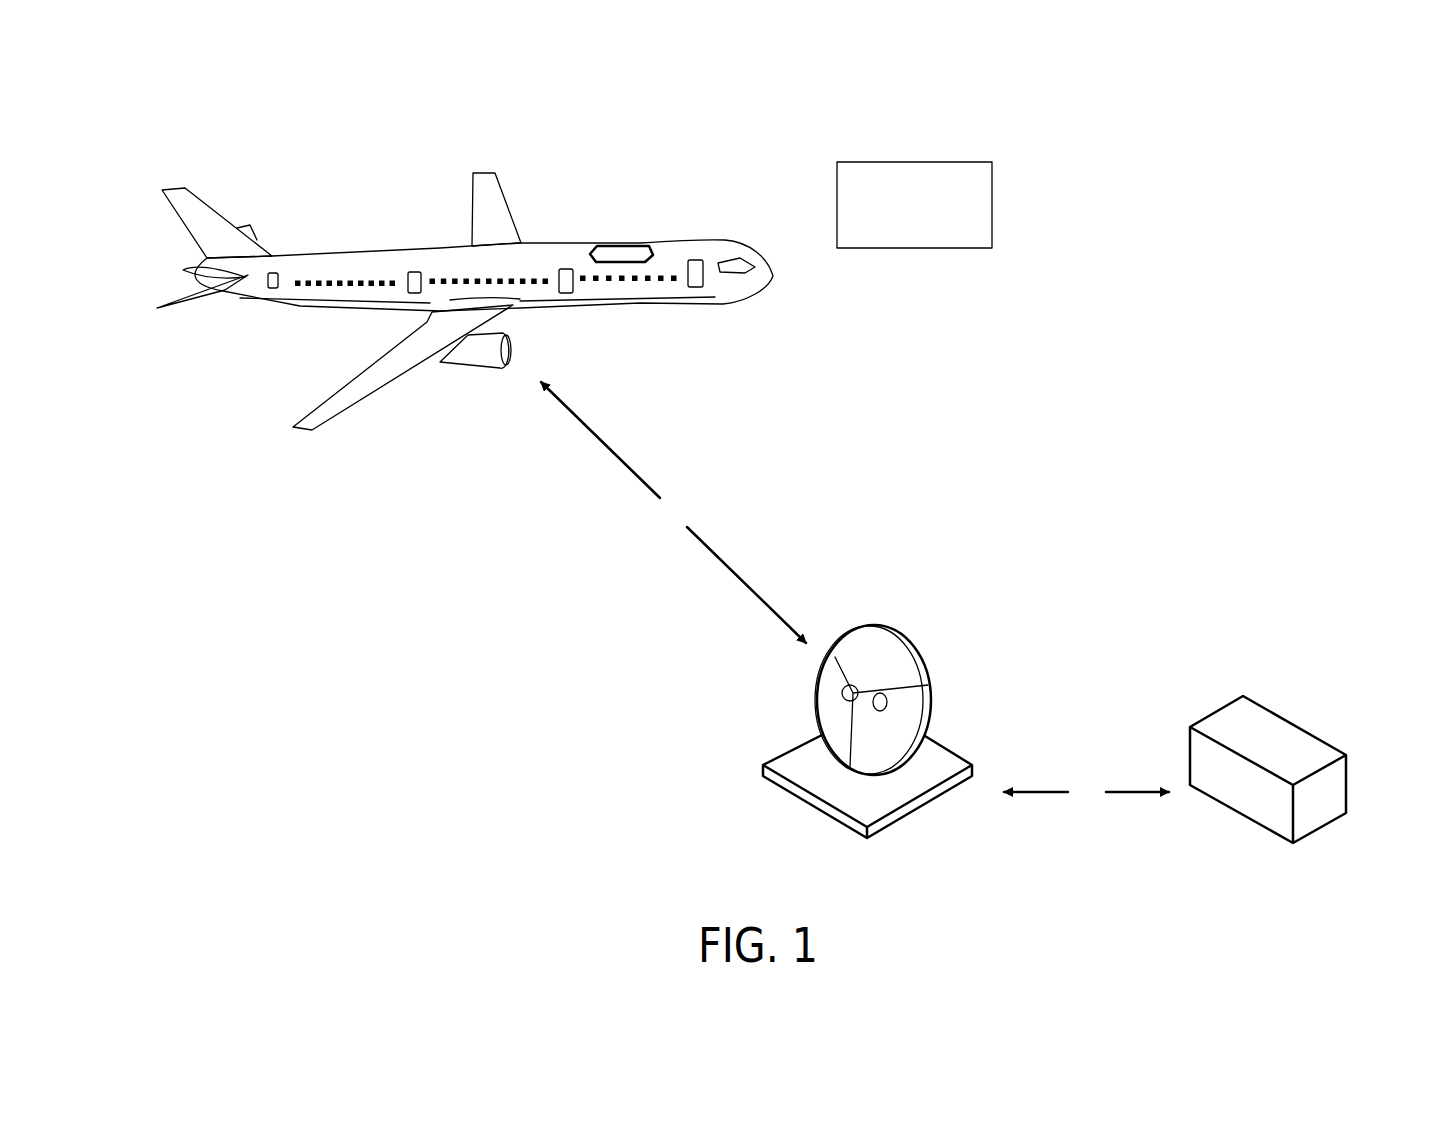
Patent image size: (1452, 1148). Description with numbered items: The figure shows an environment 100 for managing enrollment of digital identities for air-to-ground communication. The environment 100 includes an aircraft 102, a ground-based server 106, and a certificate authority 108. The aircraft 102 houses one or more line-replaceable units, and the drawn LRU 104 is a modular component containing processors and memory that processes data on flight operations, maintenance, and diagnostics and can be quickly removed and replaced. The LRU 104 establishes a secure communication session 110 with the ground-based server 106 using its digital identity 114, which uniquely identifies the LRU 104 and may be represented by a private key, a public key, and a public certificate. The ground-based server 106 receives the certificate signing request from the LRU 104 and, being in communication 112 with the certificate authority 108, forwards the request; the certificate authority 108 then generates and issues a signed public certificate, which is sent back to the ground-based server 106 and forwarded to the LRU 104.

The environment 100 is at (785, 441).
The aircraft 102 is at (527, 243).
The line-replaceable unit 104 is at (620, 243).
The ground-based server 106 is at (873, 625).
The certificate authority 108 is at (1243, 694).
The secure communication session 110 is at (673, 512).
The communication 112 is at (1086, 793).
The digital identity 114 is at (655, 256).